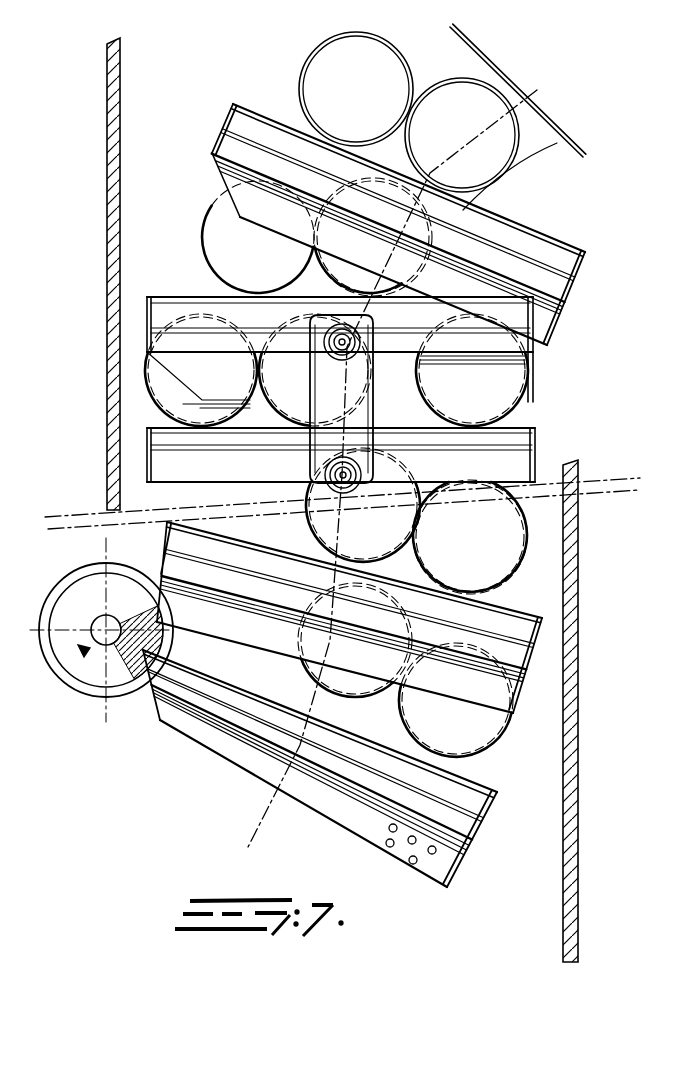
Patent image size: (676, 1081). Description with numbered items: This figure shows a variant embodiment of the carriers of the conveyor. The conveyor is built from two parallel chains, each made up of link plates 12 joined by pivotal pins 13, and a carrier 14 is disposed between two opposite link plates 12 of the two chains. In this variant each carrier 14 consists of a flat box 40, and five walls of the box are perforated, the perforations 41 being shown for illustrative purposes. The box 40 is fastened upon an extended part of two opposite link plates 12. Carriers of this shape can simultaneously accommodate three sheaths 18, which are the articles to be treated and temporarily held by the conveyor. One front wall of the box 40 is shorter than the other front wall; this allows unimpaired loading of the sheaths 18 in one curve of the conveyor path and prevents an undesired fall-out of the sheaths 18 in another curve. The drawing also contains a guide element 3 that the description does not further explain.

The guide rail 3 is at (536, 157).
The link plate 12 is at (320, 453).
The pivotal pin 13 is at (408, 310).
The carrier 14 is at (497, 768).
The sheath 18 is at (362, 45).
The flat box 40 is at (447, 857).
The perforations 41 is at (413, 863).